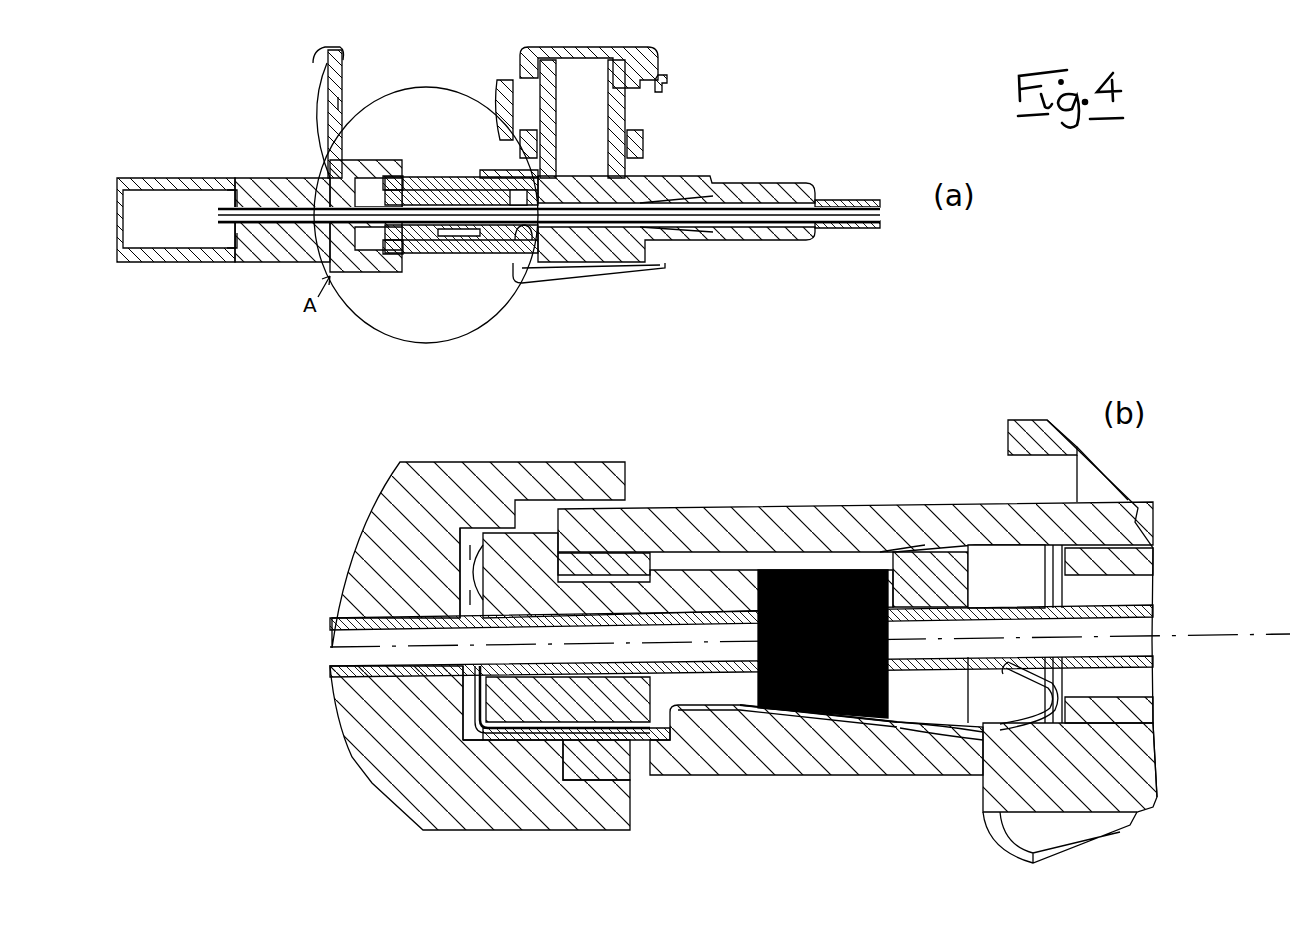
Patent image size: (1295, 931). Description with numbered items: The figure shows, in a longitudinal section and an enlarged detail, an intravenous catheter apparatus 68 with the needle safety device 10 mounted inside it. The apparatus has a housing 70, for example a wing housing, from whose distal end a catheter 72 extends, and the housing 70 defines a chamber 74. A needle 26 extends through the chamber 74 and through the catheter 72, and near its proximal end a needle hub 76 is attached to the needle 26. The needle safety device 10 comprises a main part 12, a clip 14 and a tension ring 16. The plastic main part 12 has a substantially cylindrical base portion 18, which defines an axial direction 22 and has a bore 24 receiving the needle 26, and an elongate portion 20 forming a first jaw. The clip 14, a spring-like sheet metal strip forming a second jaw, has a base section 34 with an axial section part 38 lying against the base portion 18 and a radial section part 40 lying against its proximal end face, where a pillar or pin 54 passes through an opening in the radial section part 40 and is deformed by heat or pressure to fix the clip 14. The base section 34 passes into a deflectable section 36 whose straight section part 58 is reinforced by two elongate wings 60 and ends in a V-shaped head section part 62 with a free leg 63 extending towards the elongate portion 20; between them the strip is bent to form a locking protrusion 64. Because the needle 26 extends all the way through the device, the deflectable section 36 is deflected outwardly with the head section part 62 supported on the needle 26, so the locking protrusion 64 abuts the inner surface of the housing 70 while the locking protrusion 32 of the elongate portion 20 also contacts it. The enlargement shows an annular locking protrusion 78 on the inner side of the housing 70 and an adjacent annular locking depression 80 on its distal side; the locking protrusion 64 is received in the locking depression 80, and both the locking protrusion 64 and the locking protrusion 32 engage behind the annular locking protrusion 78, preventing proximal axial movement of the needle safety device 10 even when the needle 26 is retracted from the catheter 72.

The needle safety device 10 is at (477, 195).
The main part 12 is at (697, 570).
The clip 14 is at (413, 240).
The tension ring 16 is at (813, 707).
The base portion 18 is at (372, 190).
The elongate portion 20 is at (455, 200).
The axial direction 22 is at (1250, 636).
The bore 24 is at (517, 662).
The needle 26 is at (232, 243).
The locking protrusion 32 is at (492, 190).
The base section 34 is at (395, 240).
The deflectable section 36 is at (457, 240).
The axial section part 38 is at (625, 727).
The radial section part 40 is at (483, 693).
The pillar or pin 54 is at (463, 570).
The straight section part 58 is at (900, 722).
The elongate wings 60 is at (755, 700).
The head section part 62 is at (524, 237).
The free leg 63 is at (513, 233).
The locking protrusion 64 is at (980, 740).
The intravenous catheter apparatus 68 is at (740, 150).
The housing 70 is at (590, 260).
The catheter 72 is at (860, 227).
The chamber 74 is at (405, 195).
The needle hub 76 is at (275, 176).
The annular locking protrusion 78 is at (913, 552).
The annular locking depression 80 is at (1002, 553).